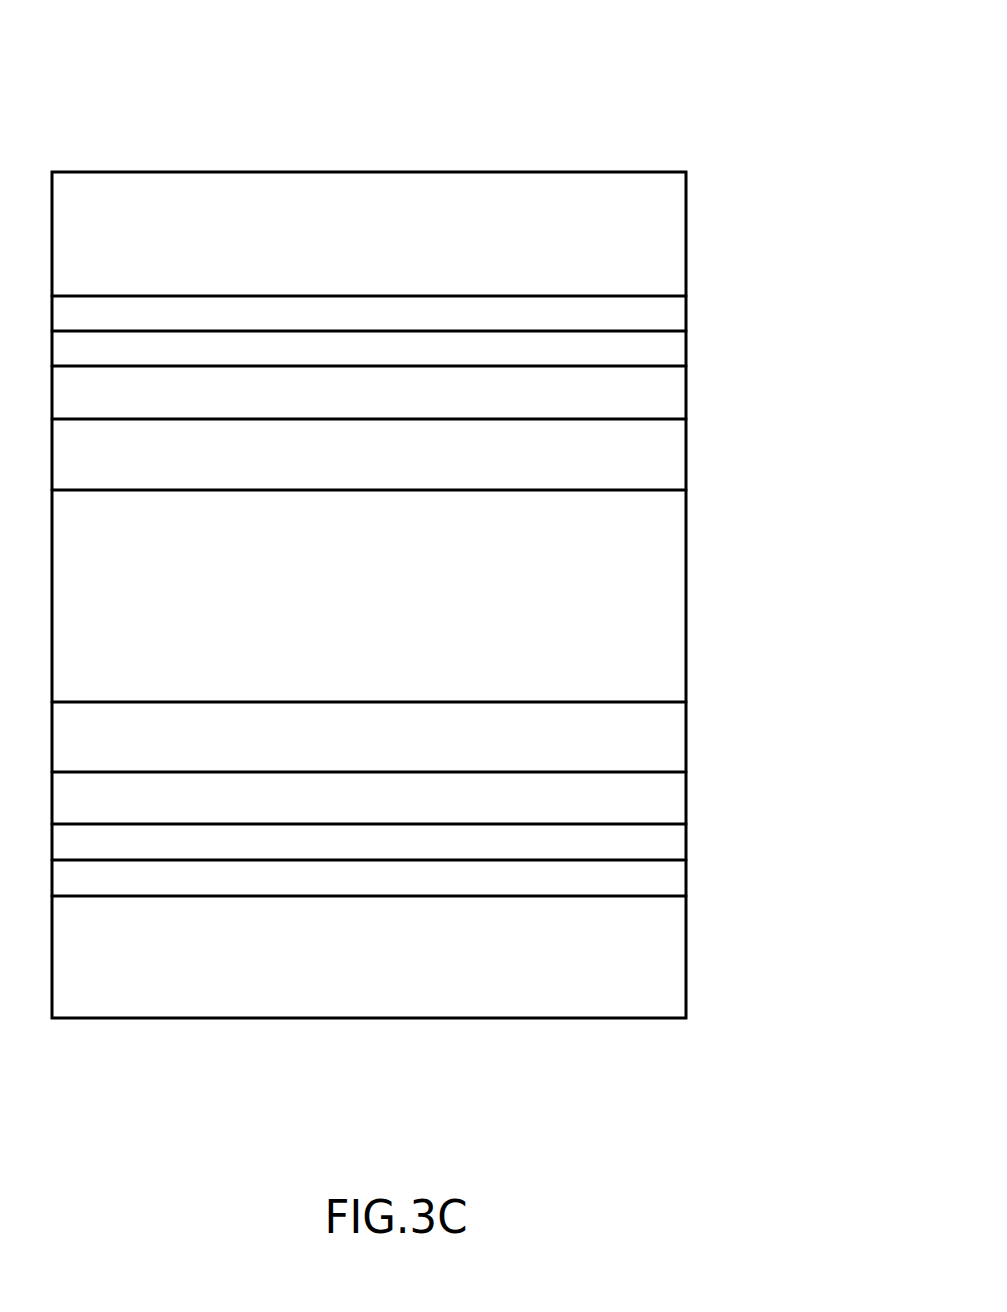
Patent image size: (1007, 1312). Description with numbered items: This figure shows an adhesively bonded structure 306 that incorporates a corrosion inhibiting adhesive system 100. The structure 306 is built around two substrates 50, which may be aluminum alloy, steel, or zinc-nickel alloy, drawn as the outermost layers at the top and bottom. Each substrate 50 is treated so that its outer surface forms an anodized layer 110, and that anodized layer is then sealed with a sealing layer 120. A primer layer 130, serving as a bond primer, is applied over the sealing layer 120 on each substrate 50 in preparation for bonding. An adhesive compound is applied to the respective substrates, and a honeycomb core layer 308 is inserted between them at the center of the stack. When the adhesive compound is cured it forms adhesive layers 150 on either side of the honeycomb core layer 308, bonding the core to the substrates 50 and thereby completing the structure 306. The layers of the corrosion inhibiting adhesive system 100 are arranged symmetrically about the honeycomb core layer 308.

The adhesively bonded structure 306 is at (600, 89).
The corrosion inhibiting adhesive system 100 is at (711, 295).
The substrate 50 is at (354, 244).
The anodized layer 110 is at (350, 324).
The sealing layer 120 is at (350, 356).
The primer layer 130 is at (350, 404).
The adhesive layer 150 is at (350, 464).
The honeycomb core layer 308 is at (350, 604).